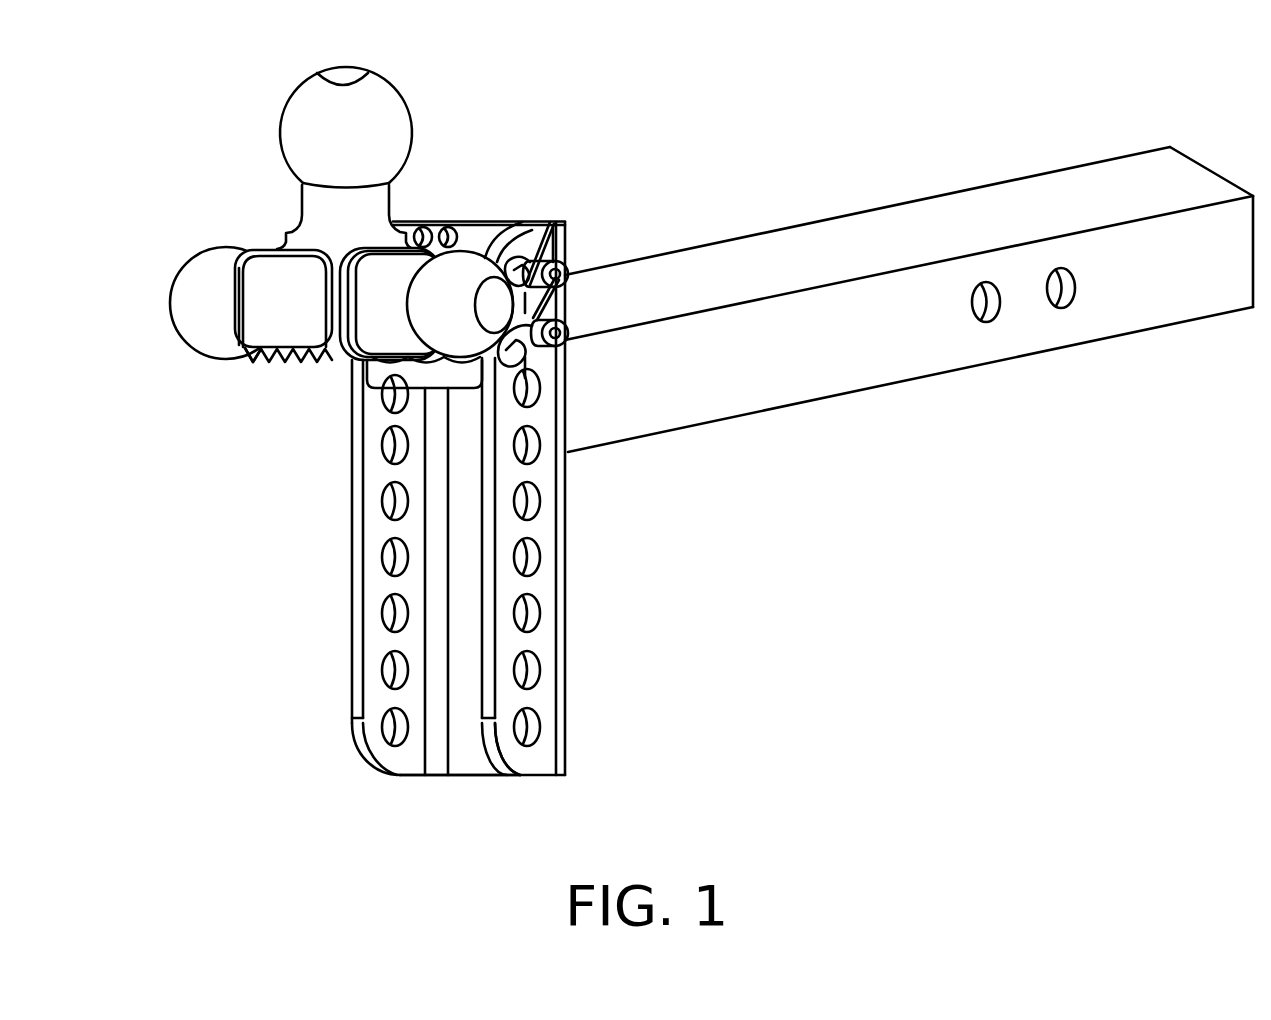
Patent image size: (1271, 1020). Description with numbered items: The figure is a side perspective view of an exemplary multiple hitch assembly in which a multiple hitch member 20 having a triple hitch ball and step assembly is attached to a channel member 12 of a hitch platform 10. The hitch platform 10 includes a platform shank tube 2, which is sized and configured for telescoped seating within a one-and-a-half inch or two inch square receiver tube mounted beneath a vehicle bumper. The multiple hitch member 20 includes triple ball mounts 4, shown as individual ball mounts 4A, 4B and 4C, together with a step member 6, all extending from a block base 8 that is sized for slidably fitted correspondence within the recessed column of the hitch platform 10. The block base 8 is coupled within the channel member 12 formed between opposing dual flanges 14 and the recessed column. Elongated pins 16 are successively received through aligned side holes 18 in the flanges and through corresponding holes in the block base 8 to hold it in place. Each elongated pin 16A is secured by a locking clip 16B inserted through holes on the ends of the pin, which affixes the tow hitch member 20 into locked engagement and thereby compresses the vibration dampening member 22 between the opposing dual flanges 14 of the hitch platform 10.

The platform shank tube 2 is at (947, 350).
The triple ball mounts 4 is at (344, 213).
The ball mount 4A is at (385, 120).
The ball mount 4B is at (193, 293).
The ball mount 4C is at (431, 268).
The step member 6 is at (268, 355).
The block base 8 is at (513, 222).
The hitch platform 10 is at (909, 280).
The channel member 12 is at (507, 498).
The dual flanges 14 is at (513, 750).
The elongated pins 16 is at (608, 268).
The elongated pin 16A is at (568, 325).
The locking clip 16B is at (566, 275).
The side holes 18 is at (541, 396).
The multiple hitch member 20 is at (417, 432).
The vibration dampening member 22 is at (493, 732).